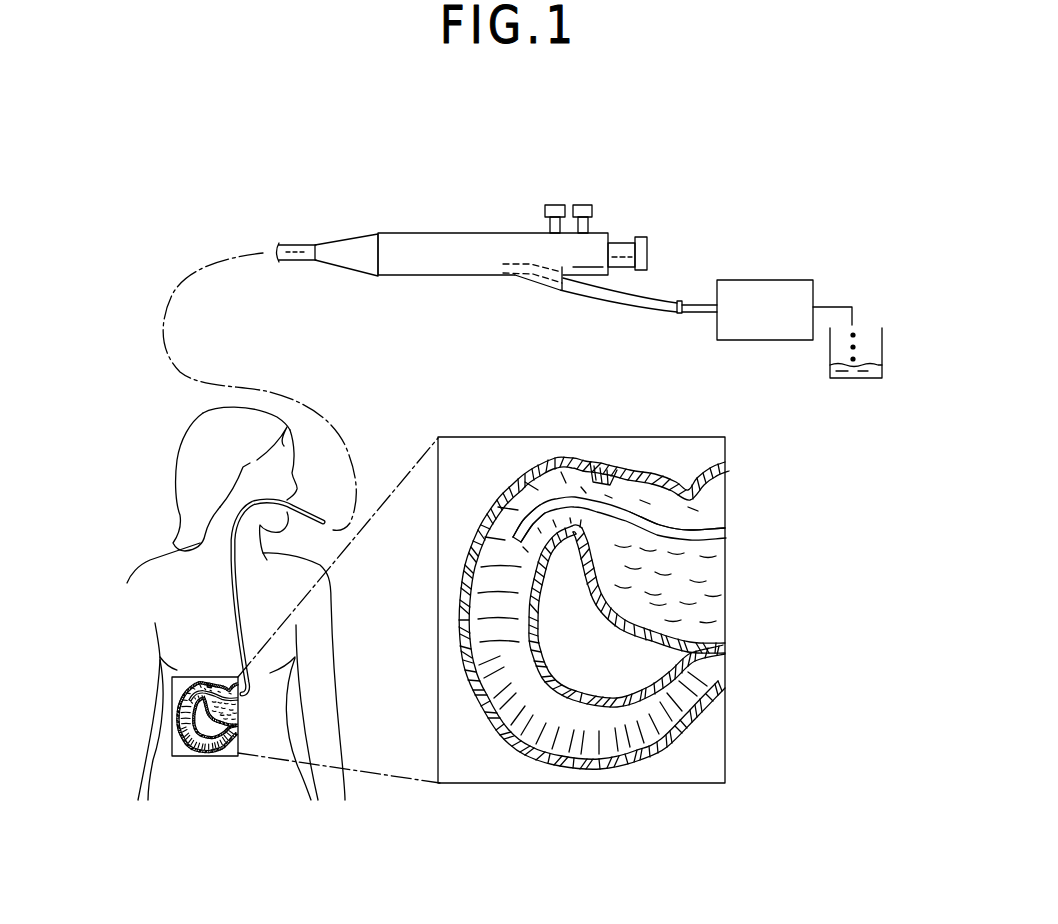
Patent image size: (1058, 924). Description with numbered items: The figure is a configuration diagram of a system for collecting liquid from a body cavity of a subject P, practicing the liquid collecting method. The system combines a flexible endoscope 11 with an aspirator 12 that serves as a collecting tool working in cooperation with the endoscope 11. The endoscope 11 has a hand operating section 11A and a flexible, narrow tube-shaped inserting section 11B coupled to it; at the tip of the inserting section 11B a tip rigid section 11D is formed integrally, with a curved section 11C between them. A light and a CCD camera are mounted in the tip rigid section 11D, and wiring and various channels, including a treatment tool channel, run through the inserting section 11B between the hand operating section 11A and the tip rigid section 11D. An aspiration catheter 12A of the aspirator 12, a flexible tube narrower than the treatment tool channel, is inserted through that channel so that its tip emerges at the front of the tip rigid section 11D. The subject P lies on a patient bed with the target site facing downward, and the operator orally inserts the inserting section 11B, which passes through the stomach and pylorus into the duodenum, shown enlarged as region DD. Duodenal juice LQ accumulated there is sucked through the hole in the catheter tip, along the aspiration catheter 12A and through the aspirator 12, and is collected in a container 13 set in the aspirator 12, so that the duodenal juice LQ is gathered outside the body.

The flexible endoscope 11 is at (384, 221).
The hand operating section 11A is at (338, 272).
The inserting section 11B is at (300, 244).
The curved section 11C is at (536, 510).
The tip rigid section 11D is at (491, 519).
The aspirator 12 is at (779, 280).
The aspiration catheter 12A is at (664, 298).
The container 13 is at (870, 328).
The duodenal juice LQ is at (843, 374).
The subject P is at (192, 470).
The duodenum DD is at (495, 684).